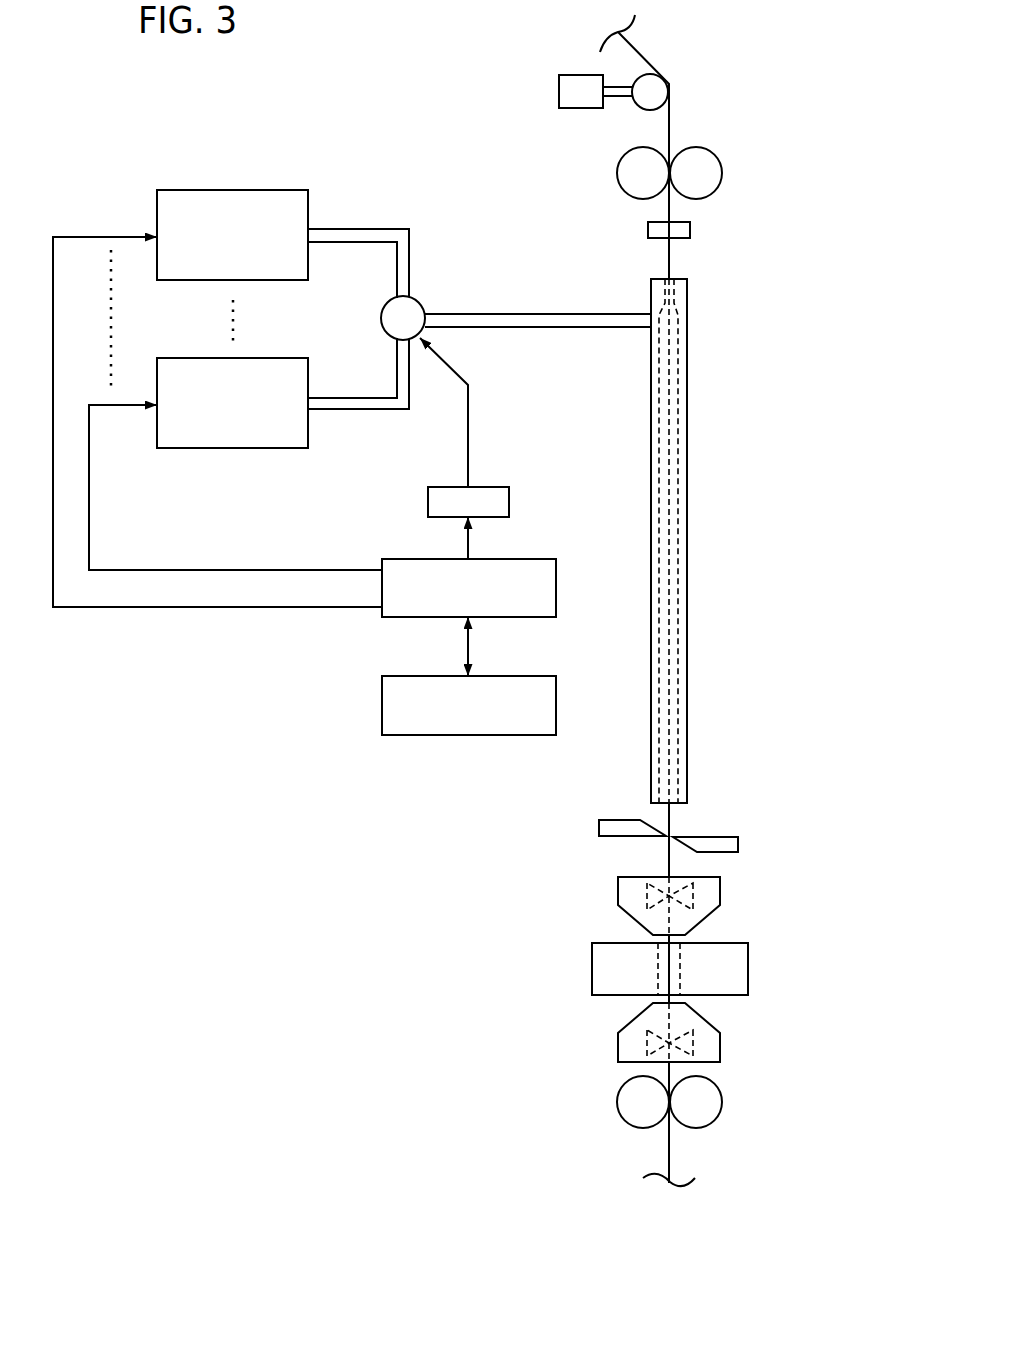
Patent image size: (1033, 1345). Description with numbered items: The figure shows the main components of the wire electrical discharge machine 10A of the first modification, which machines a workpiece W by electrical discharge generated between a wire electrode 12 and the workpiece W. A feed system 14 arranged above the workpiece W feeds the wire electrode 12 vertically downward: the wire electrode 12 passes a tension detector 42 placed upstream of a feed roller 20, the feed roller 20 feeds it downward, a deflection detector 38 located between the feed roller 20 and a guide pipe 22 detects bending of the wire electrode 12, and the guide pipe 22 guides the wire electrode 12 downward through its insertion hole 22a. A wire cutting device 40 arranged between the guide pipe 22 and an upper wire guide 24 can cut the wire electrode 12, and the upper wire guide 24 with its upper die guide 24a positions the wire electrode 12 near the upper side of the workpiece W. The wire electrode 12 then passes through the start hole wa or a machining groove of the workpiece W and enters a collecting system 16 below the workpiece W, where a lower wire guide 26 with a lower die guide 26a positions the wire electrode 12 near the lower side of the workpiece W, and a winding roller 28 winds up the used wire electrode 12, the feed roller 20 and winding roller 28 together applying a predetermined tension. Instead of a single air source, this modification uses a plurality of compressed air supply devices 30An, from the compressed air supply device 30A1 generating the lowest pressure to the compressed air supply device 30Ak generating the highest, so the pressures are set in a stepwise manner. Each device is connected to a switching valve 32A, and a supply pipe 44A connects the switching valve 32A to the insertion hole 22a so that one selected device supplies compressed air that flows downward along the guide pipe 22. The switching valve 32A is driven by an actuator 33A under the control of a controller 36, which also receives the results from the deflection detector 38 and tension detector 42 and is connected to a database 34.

The wire electrical discharge machine 10A is at (240, 90).
The wire electrode 12 is at (672, 112).
The feed system 14 is at (727, 320).
The collecting system 16 is at (730, 1075).
The feed roller 20 is at (723, 175).
The guide pipe 22 is at (687, 370).
The insertion hole 22a is at (662, 402).
The upper wire guide 24 is at (722, 883).
The upper die guide 24a is at (645, 897).
The lower wire guide 26 is at (722, 1040).
The lower die guide 26a is at (645, 1043).
The winding roller 28 is at (617, 1108).
The compressed air supply device 30A1 is at (240, 190).
The compressed air supply device 30Ak is at (188, 450).
The compressed air supply devices 30An is at (231, 327).
The switching valve 32A is at (422, 298).
The actuator 33A is at (509, 496).
The database 34 is at (556, 685).
The controller 36 is at (556, 568).
The deflection detector 38 is at (690, 229).
The wire cutting device 40 is at (595, 817).
The tension detector 42 is at (572, 102).
The supply pipe 44A is at (548, 330).
The workpiece W is at (748, 955).
The start hole wa is at (752, 969).